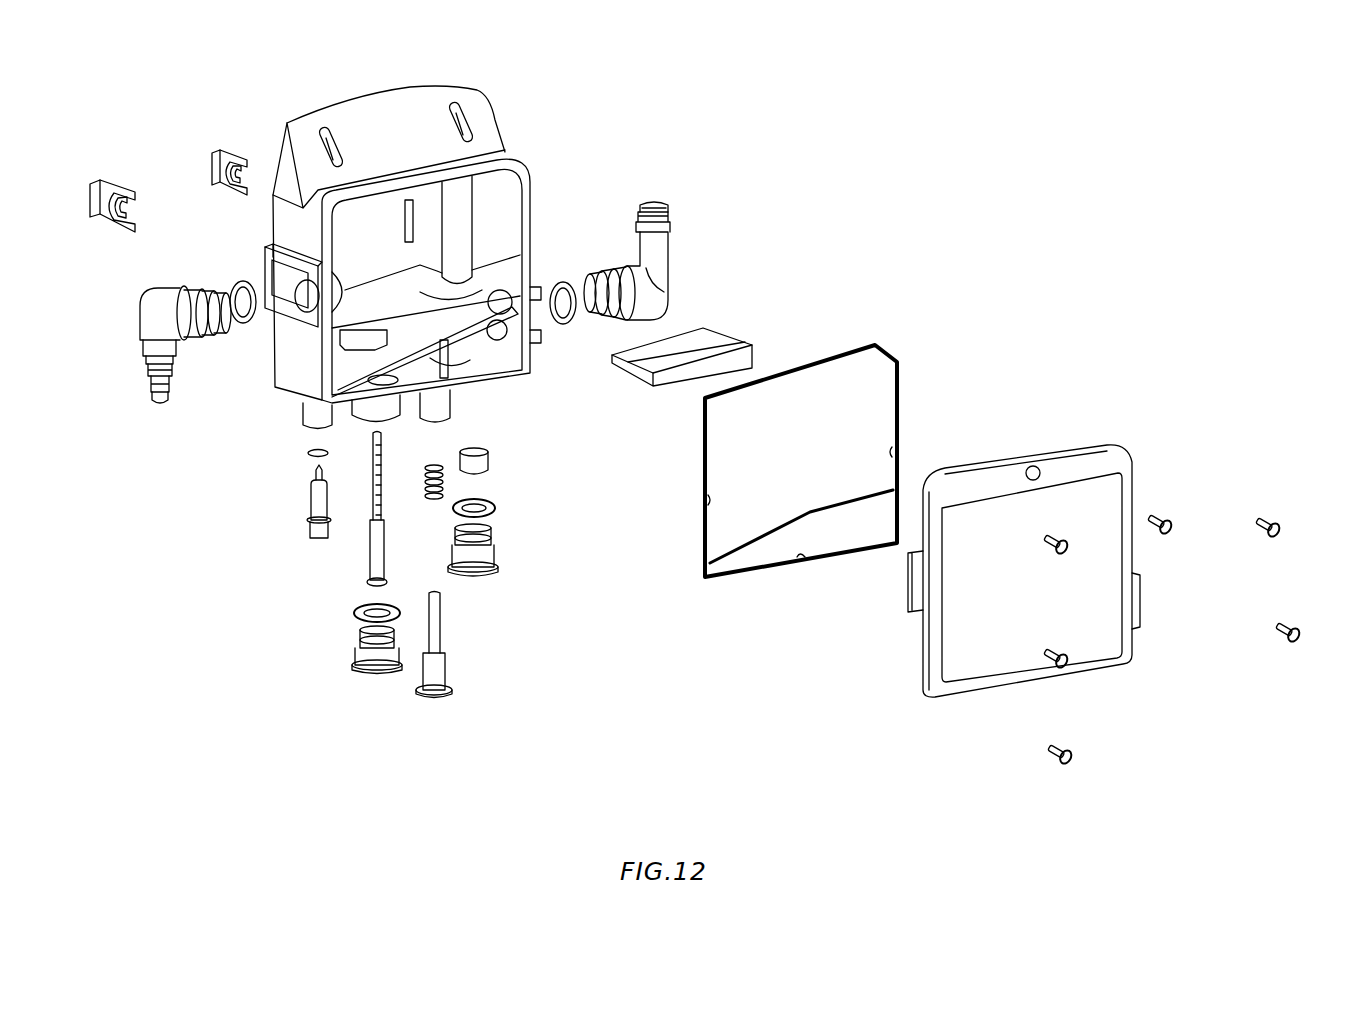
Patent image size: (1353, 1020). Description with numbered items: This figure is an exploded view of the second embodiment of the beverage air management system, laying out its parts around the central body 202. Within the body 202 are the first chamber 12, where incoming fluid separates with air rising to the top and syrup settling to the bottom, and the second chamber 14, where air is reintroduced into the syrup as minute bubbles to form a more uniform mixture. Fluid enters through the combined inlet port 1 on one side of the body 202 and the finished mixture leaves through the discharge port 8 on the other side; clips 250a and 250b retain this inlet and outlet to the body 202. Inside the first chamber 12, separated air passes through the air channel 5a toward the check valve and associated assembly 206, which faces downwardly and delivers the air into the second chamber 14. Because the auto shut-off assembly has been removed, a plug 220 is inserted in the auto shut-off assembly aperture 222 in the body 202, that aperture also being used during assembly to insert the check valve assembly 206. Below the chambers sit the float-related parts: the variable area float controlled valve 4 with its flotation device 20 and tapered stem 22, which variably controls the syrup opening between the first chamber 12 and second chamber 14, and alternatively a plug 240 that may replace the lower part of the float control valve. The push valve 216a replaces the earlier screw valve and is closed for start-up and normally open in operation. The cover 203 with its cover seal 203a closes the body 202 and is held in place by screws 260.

The inlet port 1 is at (140, 328).
The variable area float controlled valve 4 is at (300, 448).
The air channel 5a is at (465, 224).
The discharge port 8 is at (665, 282).
The first chamber 12 is at (370, 213).
The second chamber 14 is at (523, 367).
The flotation device 20 is at (727, 333).
The stem 22 is at (370, 557).
The body 202 is at (505, 140).
The cover 203 is at (935, 695).
The cover seal 203a is at (898, 383).
The check valve and associated assembly 206 is at (508, 448).
The push valve 216a is at (453, 693).
The plug 220 is at (470, 572).
The auto shut-off assembly aperture 222 is at (470, 360).
The plug 240 is at (340, 595).
The clip 250a is at (108, 175).
The clip 250b is at (213, 158).
The screws 260 is at (1170, 518).